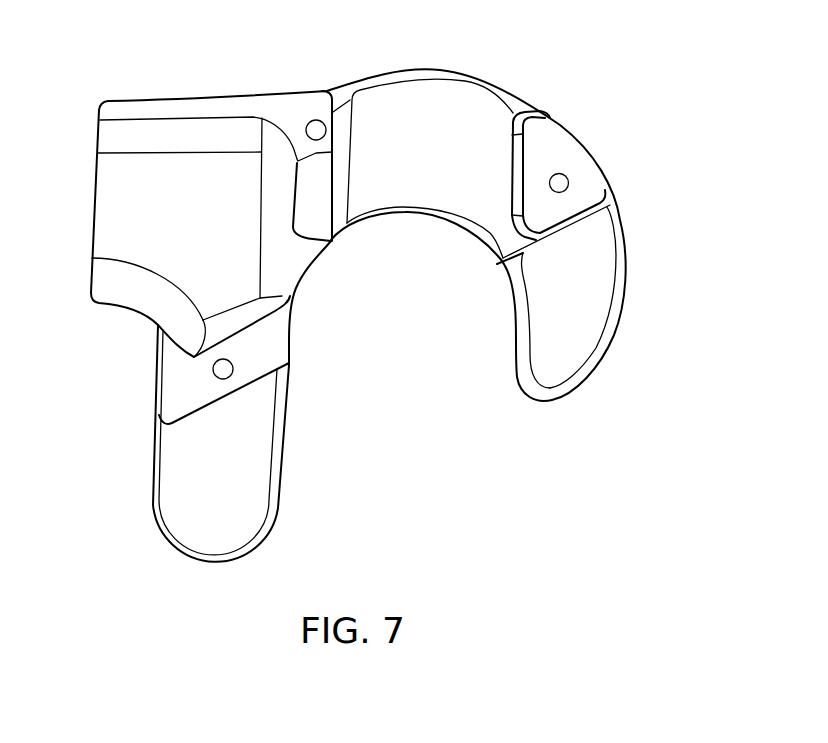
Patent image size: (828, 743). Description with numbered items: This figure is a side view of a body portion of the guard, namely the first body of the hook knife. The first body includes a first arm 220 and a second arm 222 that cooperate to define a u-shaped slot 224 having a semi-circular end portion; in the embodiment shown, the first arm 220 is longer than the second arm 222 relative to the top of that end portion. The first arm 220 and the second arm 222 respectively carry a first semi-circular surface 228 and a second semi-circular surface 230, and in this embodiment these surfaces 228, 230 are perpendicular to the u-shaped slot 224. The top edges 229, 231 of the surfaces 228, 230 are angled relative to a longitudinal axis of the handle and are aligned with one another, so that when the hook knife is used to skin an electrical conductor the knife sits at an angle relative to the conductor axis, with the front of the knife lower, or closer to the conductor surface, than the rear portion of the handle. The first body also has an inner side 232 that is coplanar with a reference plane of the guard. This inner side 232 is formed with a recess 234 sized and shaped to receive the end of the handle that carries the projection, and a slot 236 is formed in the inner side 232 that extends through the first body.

The first arm 220 is at (170, 541).
The second arm 222 is at (560, 392).
The u-shaped slot 224 is at (408, 475).
The first semi-circular surface 228 is at (260, 458).
The top edge of the first semi-circular surface 229 is at (199, 412).
The second semi-circular surface 230 is at (587, 312).
The top edge of the second semi-circular surface 231 is at (550, 236).
The inner side 232 is at (287, 106).
The recess 234 is at (202, 204).
The slot 236 is at (447, 100).